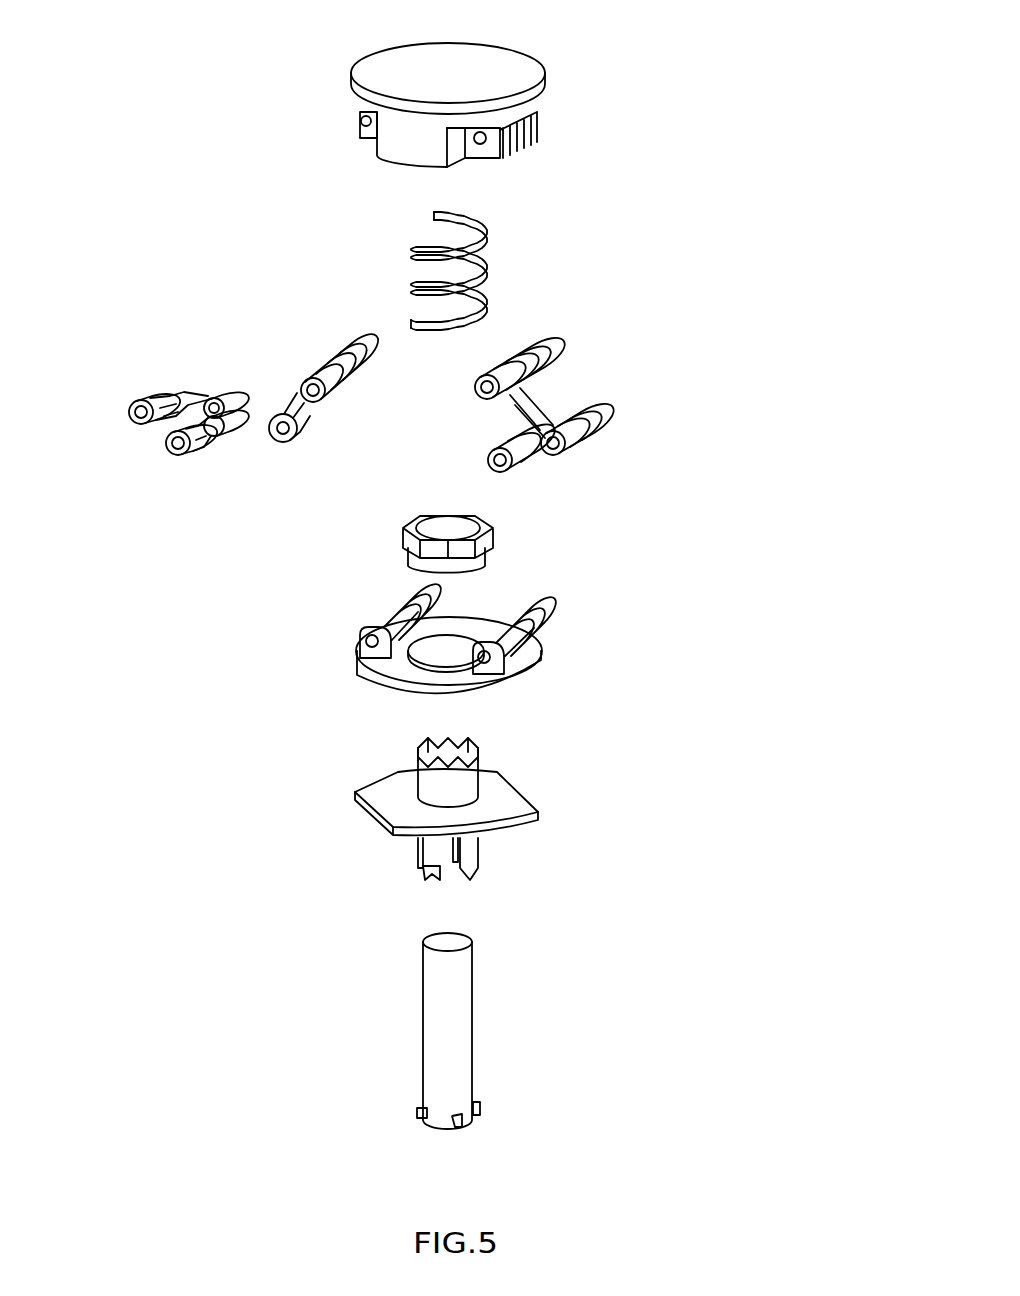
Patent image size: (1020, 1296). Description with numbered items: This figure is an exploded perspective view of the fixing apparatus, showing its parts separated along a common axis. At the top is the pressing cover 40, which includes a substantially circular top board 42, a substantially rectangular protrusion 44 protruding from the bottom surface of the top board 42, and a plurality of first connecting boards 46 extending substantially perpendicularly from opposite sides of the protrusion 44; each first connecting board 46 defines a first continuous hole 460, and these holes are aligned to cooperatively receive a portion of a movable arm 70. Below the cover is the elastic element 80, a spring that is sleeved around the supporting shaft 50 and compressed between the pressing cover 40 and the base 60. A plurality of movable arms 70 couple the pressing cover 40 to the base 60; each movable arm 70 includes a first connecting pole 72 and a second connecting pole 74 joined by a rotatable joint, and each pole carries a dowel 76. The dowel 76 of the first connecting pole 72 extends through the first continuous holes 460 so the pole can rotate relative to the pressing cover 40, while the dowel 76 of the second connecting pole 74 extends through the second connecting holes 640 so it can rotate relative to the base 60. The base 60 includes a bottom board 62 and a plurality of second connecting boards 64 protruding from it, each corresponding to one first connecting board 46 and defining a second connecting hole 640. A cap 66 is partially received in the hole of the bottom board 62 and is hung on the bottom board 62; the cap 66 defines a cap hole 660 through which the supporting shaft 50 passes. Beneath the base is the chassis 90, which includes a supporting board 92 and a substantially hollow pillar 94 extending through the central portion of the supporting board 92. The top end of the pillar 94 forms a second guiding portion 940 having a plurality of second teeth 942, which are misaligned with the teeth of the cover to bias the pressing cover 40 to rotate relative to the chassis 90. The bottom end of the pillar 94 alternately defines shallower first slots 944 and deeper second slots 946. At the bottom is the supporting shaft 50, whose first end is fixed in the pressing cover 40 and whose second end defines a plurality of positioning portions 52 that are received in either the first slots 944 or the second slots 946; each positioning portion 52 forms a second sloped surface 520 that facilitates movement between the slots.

The pressing cover 40 is at (282, 10).
The top board 42 is at (427, 68).
The protrusion 44 is at (418, 145).
The first connecting boards 46 is at (487, 150).
The first continuous hole 460 is at (483, 140).
The elastic element 80 is at (487, 272).
The movable arms 70 is at (226, 276).
The first connecting pole 72 is at (337, 355).
The second connecting pole 74 is at (137, 438).
The dowel 76 is at (310, 375).
The cap 66 is at (410, 550).
The cap hole 660 is at (453, 532).
The base 60 is at (222, 627).
The bottom board 62 is at (393, 667).
The second connecting boards 64 is at (357, 653).
The second connecting hole 640 is at (363, 632).
The chassis 90 is at (723, 675).
The supporting board 92 is at (360, 788).
The hollow pillar 94 is at (657, 718).
The second guiding portion 940 is at (480, 788).
The second teeth 942 is at (425, 742).
The first slots 944 is at (437, 875).
The second slots 946 is at (472, 858).
The supporting shaft 50 is at (463, 987).
The positioning portions 52 is at (457, 1130).
The second sloped surface 520 is at (453, 1120).